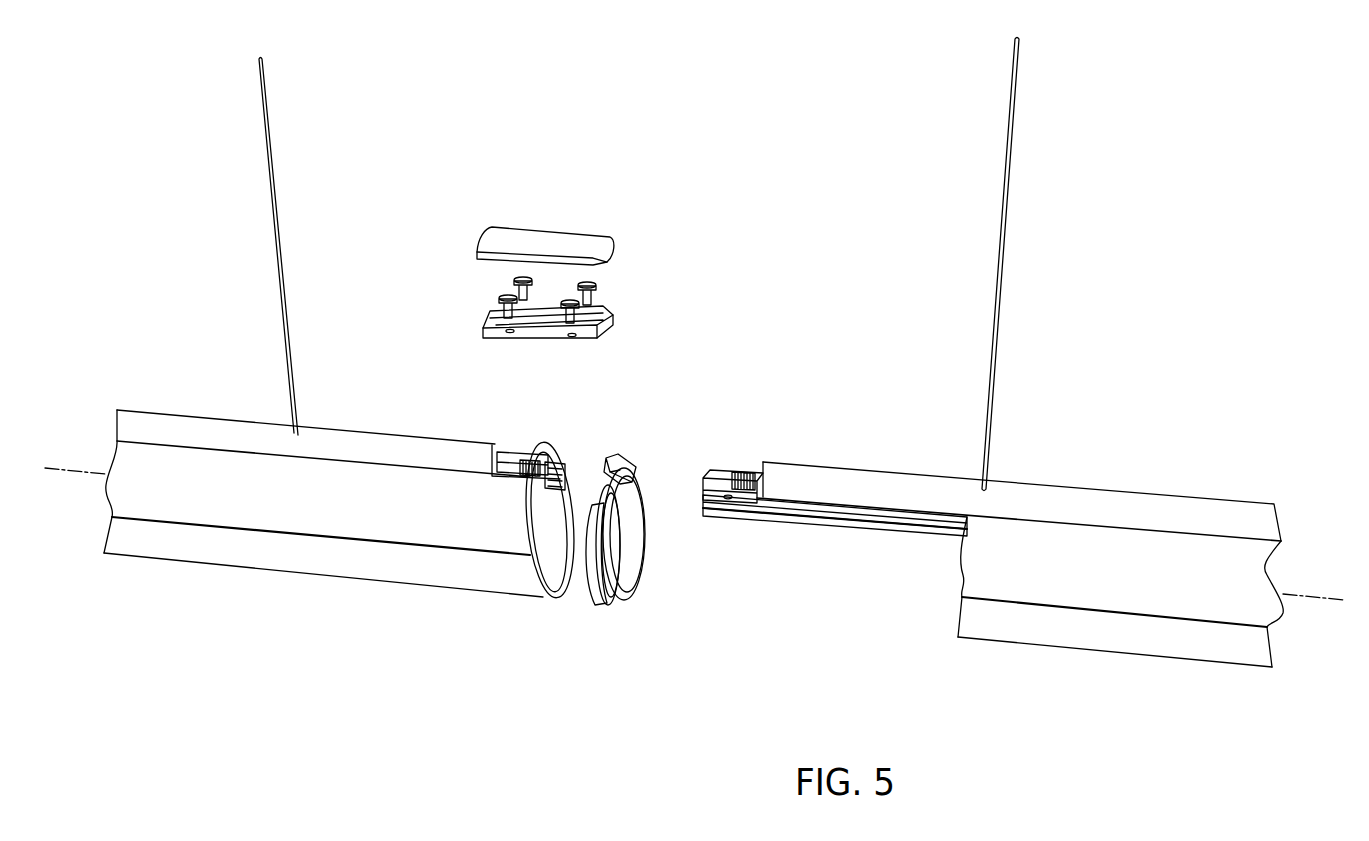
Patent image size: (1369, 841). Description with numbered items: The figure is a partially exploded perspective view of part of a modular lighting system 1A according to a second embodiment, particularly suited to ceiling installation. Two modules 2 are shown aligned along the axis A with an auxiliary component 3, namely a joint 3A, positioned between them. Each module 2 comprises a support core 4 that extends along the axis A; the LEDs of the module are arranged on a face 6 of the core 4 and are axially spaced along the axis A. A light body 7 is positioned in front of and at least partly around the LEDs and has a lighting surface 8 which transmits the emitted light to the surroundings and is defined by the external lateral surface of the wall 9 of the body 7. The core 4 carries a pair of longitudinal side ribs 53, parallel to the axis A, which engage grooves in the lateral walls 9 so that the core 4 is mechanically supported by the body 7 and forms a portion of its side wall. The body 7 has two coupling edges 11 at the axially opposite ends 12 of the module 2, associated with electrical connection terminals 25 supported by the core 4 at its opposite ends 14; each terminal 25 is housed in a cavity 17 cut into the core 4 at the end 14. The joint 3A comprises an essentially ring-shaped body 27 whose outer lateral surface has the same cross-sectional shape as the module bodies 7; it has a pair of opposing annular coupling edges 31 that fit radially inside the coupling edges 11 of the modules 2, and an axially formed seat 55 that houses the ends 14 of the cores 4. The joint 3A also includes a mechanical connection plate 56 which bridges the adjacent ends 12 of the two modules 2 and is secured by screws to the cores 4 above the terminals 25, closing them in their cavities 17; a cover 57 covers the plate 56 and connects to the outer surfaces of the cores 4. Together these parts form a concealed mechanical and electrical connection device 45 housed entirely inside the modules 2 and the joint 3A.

The modular lighting system 1A is at (213, 226).
The module 2 is at (186, 545).
The auxiliary component 3 is at (628, 531).
The joint 3A is at (640, 470).
The support core 4 is at (870, 527).
The face 6 is at (805, 525).
The light body 7 is at (1173, 637).
The lighting surface 8 is at (420, 514).
The wall 9 is at (282, 521).
The coupling edge 11 is at (547, 593).
The end 12 is at (500, 583).
The end 14 is at (707, 520).
The cavity 17 is at (553, 447).
The electrical connection terminal 25 is at (530, 455).
The body 27 is at (605, 605).
The annular coupling edge 31 is at (583, 583).
The concealed mechanical and electrical connection device 45 is at (835, 612).
The longitudinal side rib 53 is at (935, 535).
The seat 55 is at (610, 468).
The mechanical connection plate 56 is at (490, 316).
The cover 57 is at (547, 243).
The axis A is at (1341, 597).